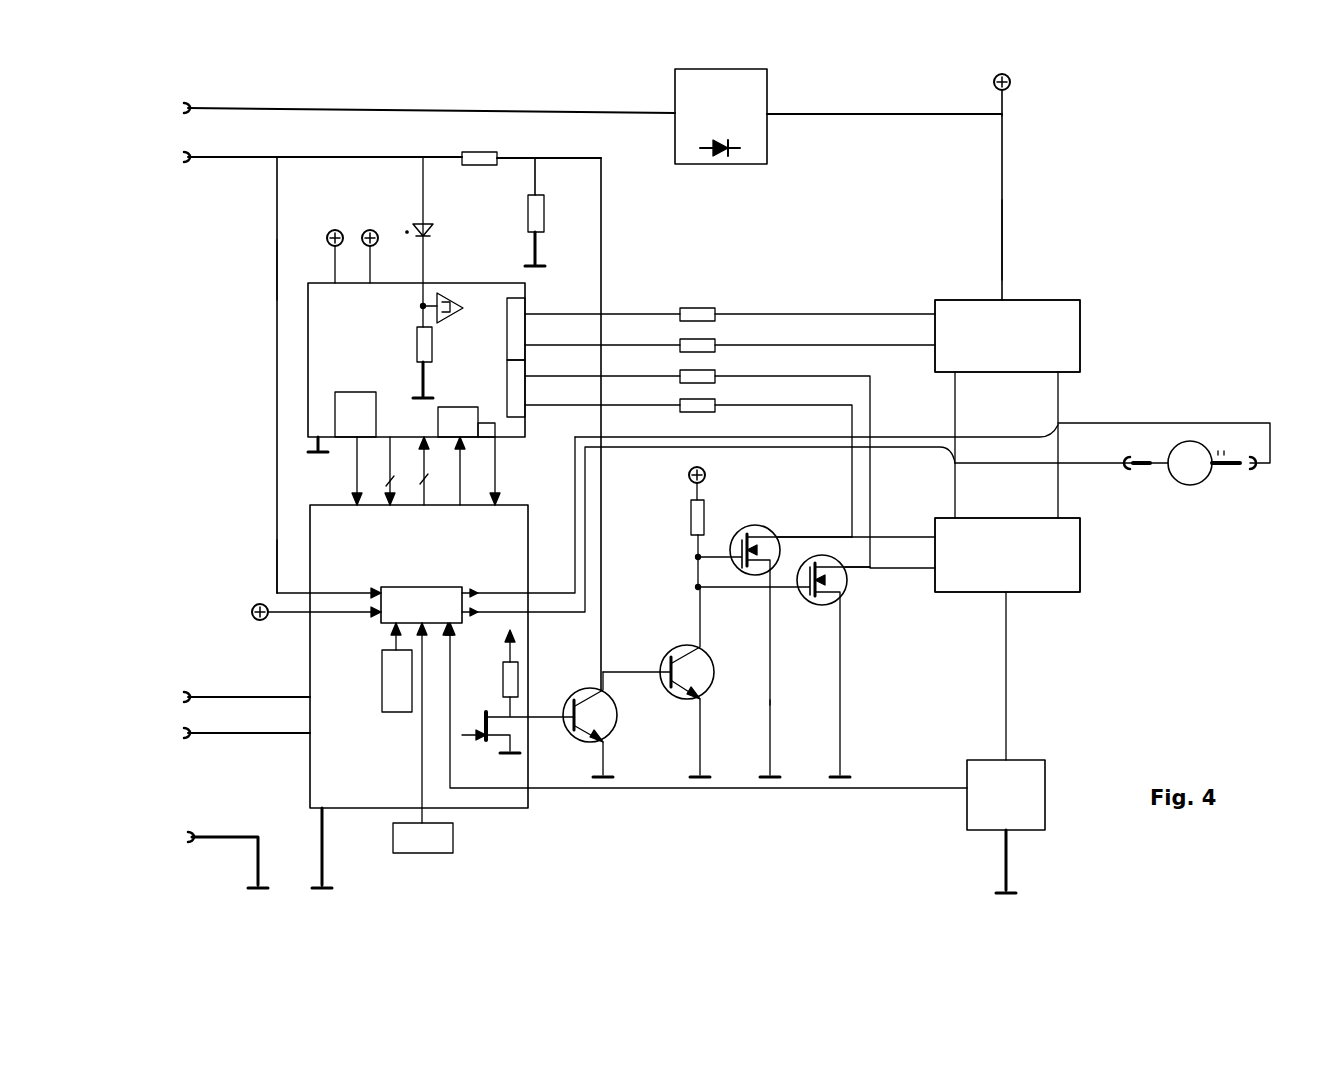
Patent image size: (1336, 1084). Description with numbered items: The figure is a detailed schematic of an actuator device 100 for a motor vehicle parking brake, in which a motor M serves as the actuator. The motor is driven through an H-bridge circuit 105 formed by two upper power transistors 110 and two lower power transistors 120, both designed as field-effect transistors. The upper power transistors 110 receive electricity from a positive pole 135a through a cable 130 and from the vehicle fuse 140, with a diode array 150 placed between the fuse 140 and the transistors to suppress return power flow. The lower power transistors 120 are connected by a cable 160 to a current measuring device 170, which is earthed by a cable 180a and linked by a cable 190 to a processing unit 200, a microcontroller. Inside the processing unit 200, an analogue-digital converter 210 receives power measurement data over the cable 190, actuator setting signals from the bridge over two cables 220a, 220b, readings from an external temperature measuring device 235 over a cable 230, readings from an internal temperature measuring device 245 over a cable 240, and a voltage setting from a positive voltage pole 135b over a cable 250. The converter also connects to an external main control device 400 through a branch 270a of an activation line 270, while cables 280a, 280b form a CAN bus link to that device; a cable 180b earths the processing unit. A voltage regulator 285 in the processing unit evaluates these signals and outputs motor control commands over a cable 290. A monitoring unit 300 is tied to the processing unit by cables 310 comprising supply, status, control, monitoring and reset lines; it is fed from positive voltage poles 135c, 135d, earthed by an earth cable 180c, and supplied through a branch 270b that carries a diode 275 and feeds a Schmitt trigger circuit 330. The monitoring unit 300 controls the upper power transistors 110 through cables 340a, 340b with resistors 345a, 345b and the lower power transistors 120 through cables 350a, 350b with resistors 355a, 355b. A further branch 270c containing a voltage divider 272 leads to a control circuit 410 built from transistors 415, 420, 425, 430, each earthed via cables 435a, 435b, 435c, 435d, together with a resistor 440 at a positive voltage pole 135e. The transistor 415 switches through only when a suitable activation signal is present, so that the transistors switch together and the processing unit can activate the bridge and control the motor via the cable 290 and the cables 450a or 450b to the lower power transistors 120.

The actuator device 100 is at (1090, 218).
The H-bridge circuit 105 is at (1098, 340).
The power transistors 110 is at (1007, 336).
The power transistors 120 is at (1007, 555).
The cable 130 is at (1000, 192).
The positive pole 135a is at (1012, 82).
The positive voltage pole 135b is at (252, 607).
The positive voltage pole 135c is at (333, 229).
The positive voltage pole 135d is at (374, 229).
The positive voltage pole 135e is at (688, 476).
The fuse 140 is at (562, 107).
The diode array 150 is at (721, 116).
The cable 160 is at (1010, 685).
The current measuring device 170 is at (1006, 795).
The cable 180a is at (1000, 882).
The cable 180b is at (318, 870).
The earth cable 180c is at (300, 435).
The cable 190 is at (870, 790).
The processing unit 200 is at (470, 860).
The analogue-digital converter 210 is at (433, 585).
The cable 220a is at (960, 437).
The cable 220b is at (755, 448).
The cable 230 is at (418, 740).
The external temperature measuring device 235 is at (423, 854).
The cable 240 is at (390, 630).
The internal temperature measuring device 245 is at (387, 695).
The cable 250 is at (275, 588).
The activation line 270 is at (260, 158).
The branch 270a is at (276, 238).
The branch 270b is at (428, 190).
The branch 270c is at (603, 262).
The voltage divider 272 is at (547, 156).
The diode 275 is at (430, 230).
The cable 280a is at (260, 694).
The cable 280b is at (262, 738).
The voltage regulator 285 is at (498, 770).
The cable 290 is at (538, 760).
The monitoring unit 300 is at (298, 321).
The cables 310 is at (328, 477).
The Schmitt trigger circuit 330 is at (405, 325).
The cable 340a is at (808, 312).
The cable 340b is at (885, 342).
The resistor 345a is at (680, 308).
The resistor 345b is at (712, 336).
The cable 350a is at (950, 312).
The cable 350b is at (915, 478).
The resistor 355a is at (725, 374).
The resistor 355b is at (725, 404).
The main control device 400 is at (361, 445).
The control circuit 410 is at (744, 740).
The transistor 415 is at (585, 688).
The transistor 420 is at (672, 648).
The transistor 425 is at (752, 528).
The transistor 430 is at (845, 600).
The cable 435a is at (605, 760).
The cable 435b is at (705, 780).
The cable 435c is at (772, 670).
The cable 435d is at (842, 670).
The resistor 440 is at (688, 512).
The cable 450a is at (848, 540).
The cable 450b is at (870, 590).